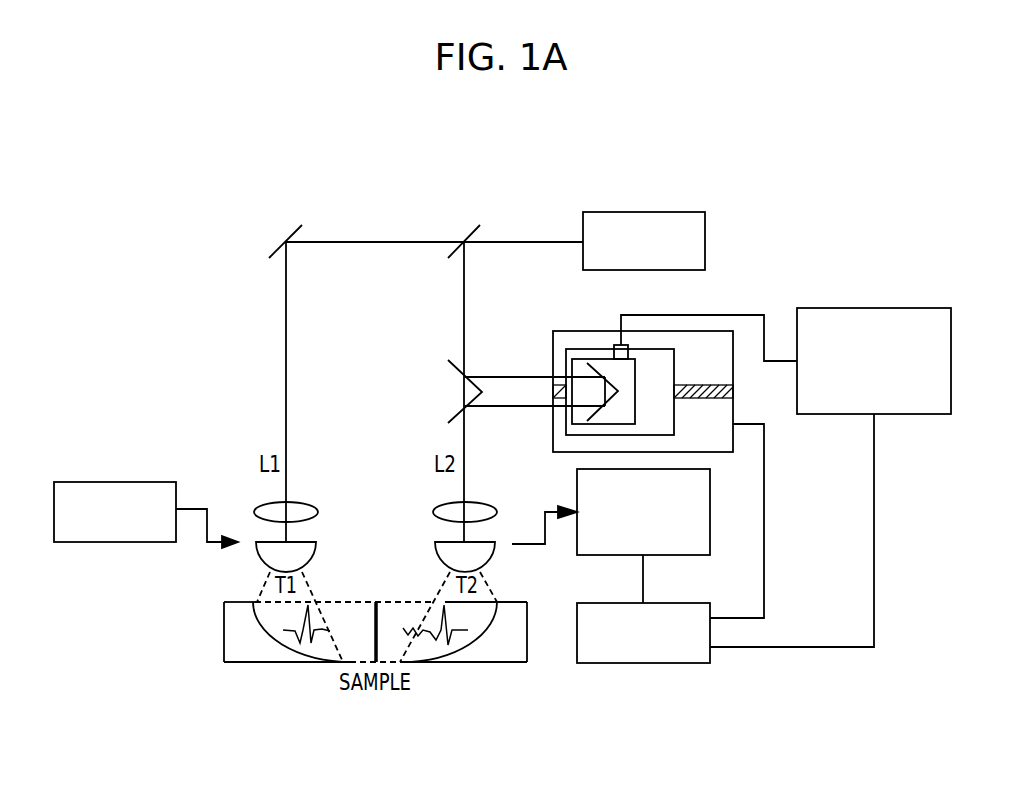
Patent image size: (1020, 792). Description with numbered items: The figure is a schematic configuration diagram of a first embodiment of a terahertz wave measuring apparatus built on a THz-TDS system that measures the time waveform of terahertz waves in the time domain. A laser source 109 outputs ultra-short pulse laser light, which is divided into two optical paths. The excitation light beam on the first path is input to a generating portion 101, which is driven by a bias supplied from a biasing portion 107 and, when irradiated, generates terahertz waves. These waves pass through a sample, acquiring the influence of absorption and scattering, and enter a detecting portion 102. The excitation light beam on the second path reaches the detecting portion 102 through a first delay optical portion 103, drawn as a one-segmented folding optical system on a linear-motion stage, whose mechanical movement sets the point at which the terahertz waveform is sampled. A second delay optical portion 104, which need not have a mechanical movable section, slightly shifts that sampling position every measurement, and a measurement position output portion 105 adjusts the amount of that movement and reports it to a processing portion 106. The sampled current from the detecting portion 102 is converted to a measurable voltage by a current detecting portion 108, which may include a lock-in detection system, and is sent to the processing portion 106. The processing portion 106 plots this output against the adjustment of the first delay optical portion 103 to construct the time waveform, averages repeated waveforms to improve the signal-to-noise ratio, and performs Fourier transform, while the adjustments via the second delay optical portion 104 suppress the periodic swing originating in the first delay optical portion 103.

The generating portion 101 is at (308, 556).
The detecting portion 102 is at (442, 555).
The first delay optical portion 103 is at (625, 390).
The second delay optical portion 104 is at (642, 356).
The measurement position output portion 105 is at (873, 308).
The processing portion 106 is at (685, 663).
The biasing portion 107 is at (115, 482).
The current detecting portion 108 is at (685, 555).
The laser source 109 is at (647, 212).